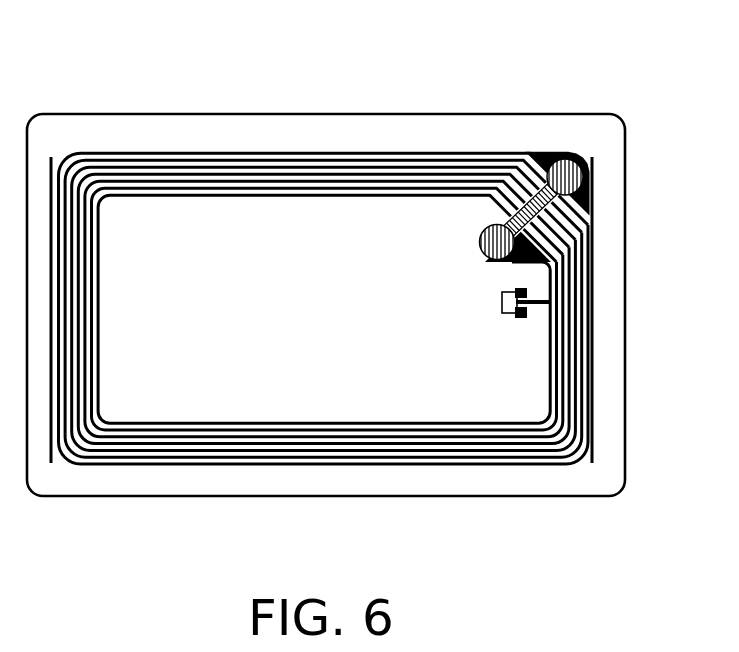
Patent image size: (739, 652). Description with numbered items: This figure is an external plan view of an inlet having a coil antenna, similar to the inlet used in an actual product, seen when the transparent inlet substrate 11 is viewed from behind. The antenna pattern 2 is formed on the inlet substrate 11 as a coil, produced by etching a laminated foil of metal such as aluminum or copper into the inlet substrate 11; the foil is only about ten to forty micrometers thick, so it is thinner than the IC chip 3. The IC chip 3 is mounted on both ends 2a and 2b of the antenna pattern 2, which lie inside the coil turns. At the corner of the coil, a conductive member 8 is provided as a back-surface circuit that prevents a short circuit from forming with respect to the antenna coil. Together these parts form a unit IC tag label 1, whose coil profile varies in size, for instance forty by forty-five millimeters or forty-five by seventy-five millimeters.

The unit IC tag label 1 is at (252, 83).
The antenna pattern 2 is at (205, 475).
The end of the antenna pattern 2a is at (516, 291).
The end of the antenna pattern 2b is at (521, 318).
The IC chip 3 is at (502, 303).
The conductive member 8 is at (567, 176).
The inlet substrate 11 is at (528, 496).